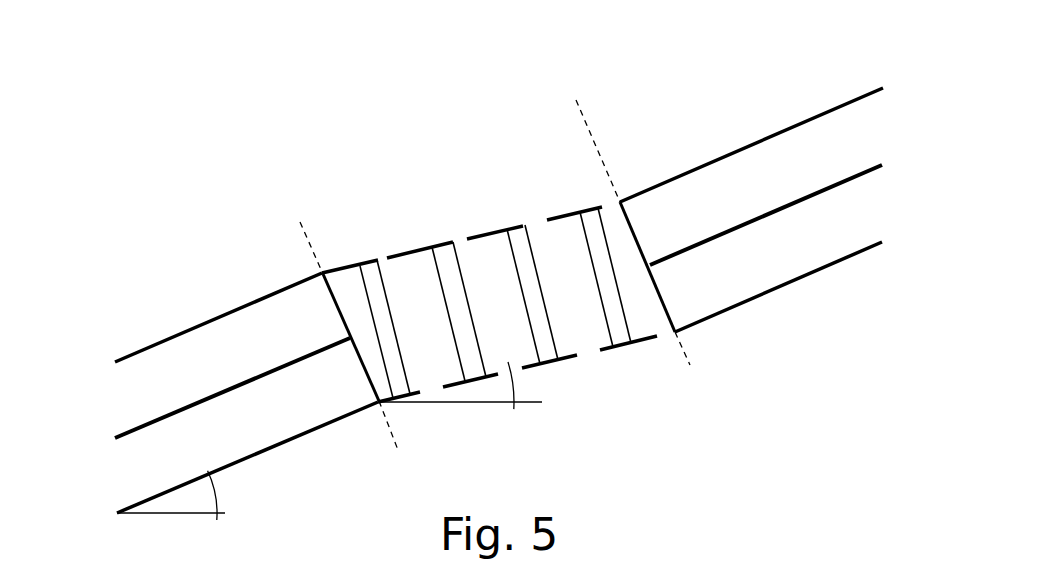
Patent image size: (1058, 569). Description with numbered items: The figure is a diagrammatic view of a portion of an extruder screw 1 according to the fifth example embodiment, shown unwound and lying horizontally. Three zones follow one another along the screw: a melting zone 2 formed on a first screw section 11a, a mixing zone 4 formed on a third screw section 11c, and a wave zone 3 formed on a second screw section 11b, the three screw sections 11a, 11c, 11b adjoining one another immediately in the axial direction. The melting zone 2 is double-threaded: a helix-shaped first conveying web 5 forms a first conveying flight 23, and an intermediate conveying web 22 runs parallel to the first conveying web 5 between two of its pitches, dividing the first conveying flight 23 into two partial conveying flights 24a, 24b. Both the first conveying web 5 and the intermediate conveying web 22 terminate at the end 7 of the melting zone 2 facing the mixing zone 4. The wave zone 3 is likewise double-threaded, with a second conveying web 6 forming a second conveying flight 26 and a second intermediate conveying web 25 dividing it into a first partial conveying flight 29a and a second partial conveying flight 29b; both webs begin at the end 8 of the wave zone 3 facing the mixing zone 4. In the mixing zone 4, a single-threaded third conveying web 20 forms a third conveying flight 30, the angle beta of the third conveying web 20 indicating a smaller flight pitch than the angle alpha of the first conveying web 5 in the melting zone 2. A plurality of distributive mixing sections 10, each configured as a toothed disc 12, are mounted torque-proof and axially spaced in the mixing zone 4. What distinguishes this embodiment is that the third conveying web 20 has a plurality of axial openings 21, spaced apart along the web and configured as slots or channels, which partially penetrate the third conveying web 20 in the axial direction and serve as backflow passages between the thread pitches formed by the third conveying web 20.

The extruder screw 1 is at (283, 178).
The melting zone 2 is at (227, 380).
The first screw section 11a is at (295, 206).
The wave zone 3 is at (761, 220).
The second screw section 11b is at (582, 102).
The mixing zone 4 is at (478, 283).
The third screw section 11c is at (572, 106).
The first conveying web 5 is at (237, 307).
The second conveying web 6 is at (718, 158).
The end of the melting zone 7 is at (375, 412).
The end of the wave zone 8 is at (673, 352).
The distributive mixing section 10 is at (490, 268).
The toothed disc 12 is at (420, 297).
The third conveying web 20 is at (447, 252).
The axial openings 21 is at (530, 222).
The intermediate conveying web 22 is at (137, 427).
The first conveying flight 23 is at (115, 488).
The partial conveying flight 24a is at (228, 445).
The partial conveying flight 24b is at (160, 352).
The second intermediate conveying web 25 is at (858, 167).
The second conveying flight 26 is at (896, 213).
The first partial conveying flight 29a is at (770, 273).
The second partial conveying flight 29b is at (805, 135).
The third conveying flight 30 is at (422, 380).